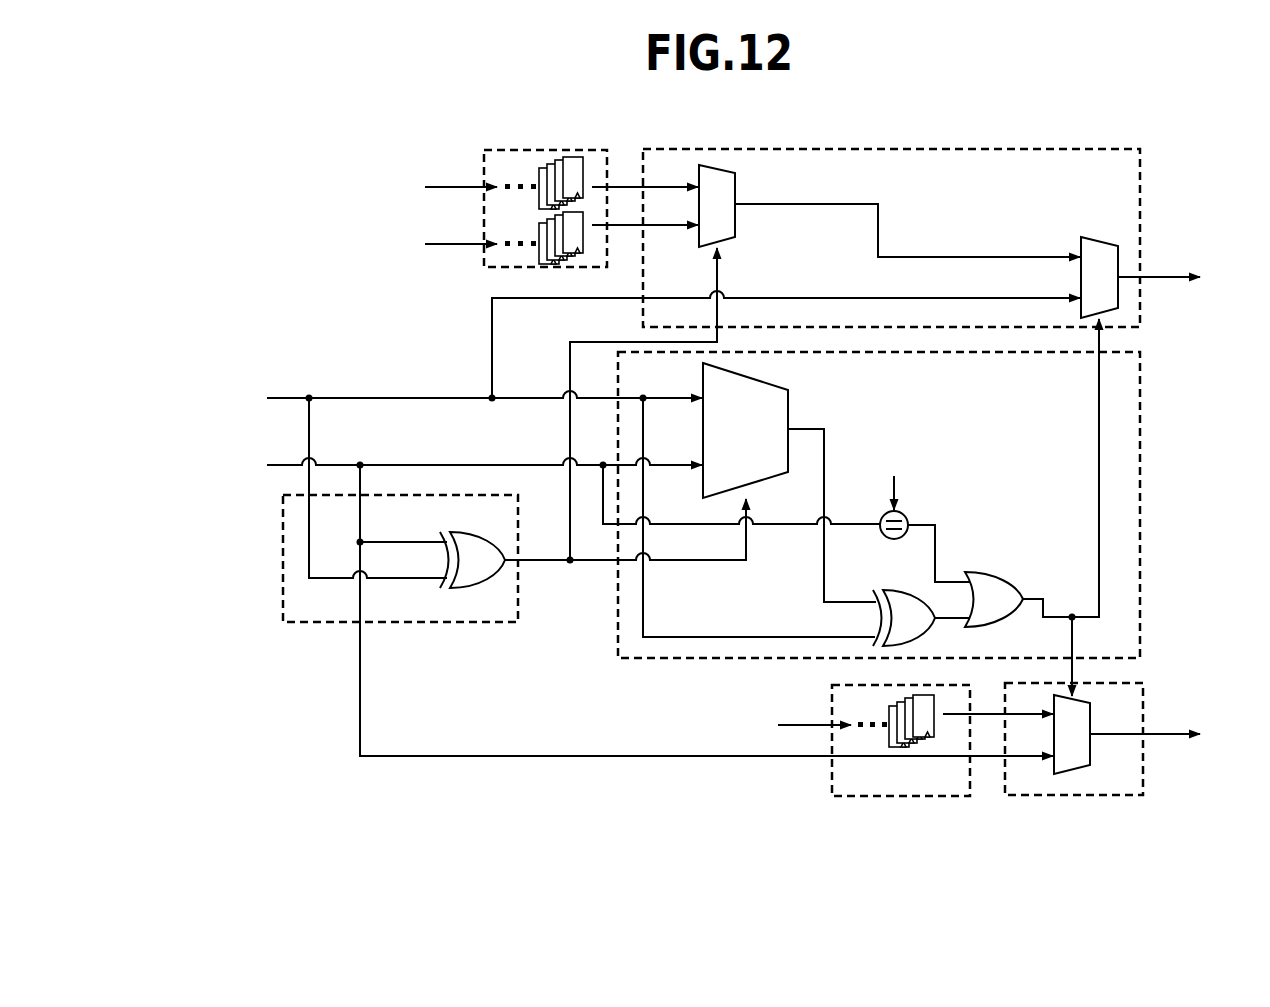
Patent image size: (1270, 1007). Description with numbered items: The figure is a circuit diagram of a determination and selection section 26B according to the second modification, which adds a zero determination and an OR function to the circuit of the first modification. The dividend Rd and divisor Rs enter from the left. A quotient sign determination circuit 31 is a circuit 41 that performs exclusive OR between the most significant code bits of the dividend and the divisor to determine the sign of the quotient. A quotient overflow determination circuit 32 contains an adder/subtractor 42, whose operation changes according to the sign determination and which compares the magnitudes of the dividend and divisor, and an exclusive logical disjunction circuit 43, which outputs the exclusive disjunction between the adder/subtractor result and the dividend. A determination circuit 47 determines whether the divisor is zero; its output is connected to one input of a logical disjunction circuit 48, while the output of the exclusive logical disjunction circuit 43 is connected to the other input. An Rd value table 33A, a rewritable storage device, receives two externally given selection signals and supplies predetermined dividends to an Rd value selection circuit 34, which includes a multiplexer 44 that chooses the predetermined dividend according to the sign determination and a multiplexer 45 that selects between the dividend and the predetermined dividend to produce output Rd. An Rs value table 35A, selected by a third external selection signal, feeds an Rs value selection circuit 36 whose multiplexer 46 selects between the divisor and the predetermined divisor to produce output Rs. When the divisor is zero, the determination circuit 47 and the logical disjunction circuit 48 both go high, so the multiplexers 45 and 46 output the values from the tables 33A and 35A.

The determination and selection section 26B is at (292, 250).
The Rd value table 33A is at (482, 163).
The Rd value selection circuit 34 is at (939, 220).
The multiplexer 44 is at (736, 225).
The multiplexer 45 is at (1100, 240).
The quotient overflow determination circuit 32 is at (927, 505).
The adder/subtractor 42 is at (790, 409).
The determination circuit 47 is at (905, 512).
The logical disjunction circuit 48 is at (992, 573).
The exclusive logical disjunction circuit 43 is at (933, 628).
The quotient sign determination circuit 31 is at (395, 594).
The circuit 41 is at (495, 578).
The Rs value table 35A is at (912, 797).
The Rs value selection circuit 36 is at (1120, 729).
The multiplexer 46 is at (1090, 748).